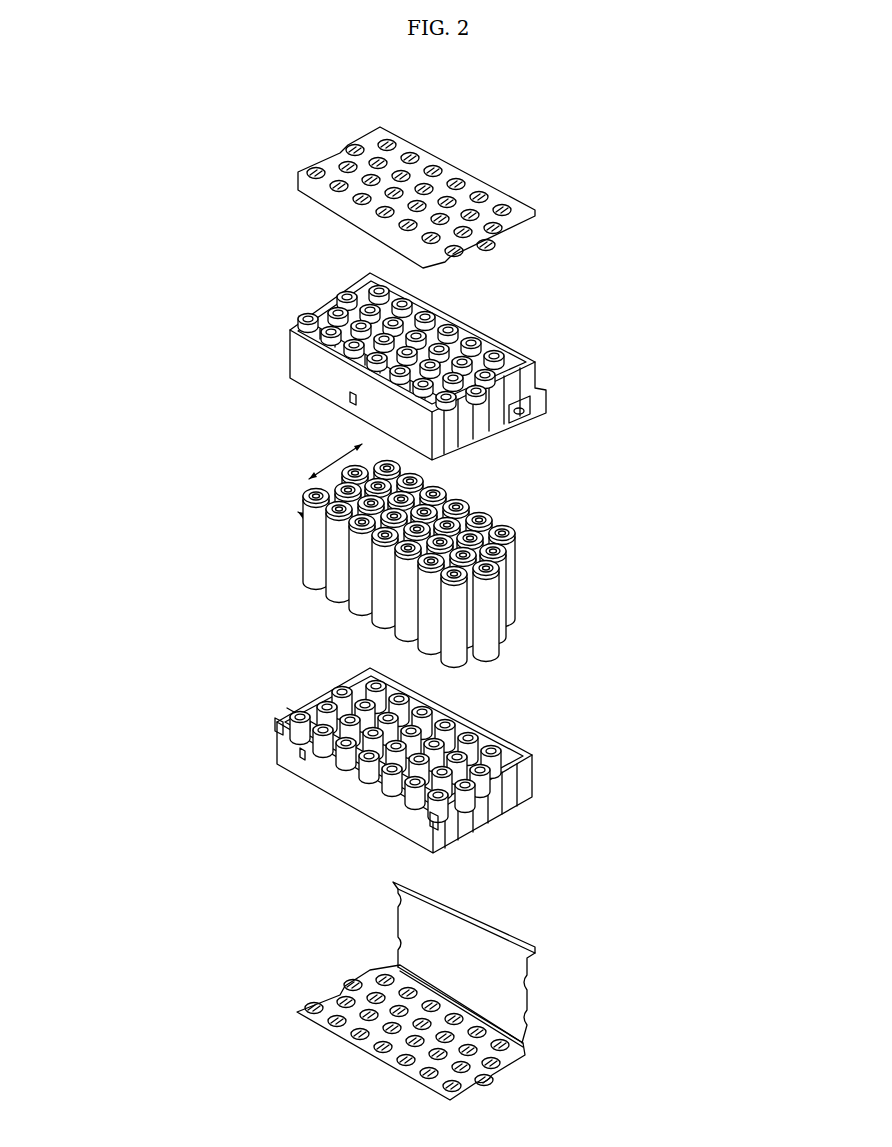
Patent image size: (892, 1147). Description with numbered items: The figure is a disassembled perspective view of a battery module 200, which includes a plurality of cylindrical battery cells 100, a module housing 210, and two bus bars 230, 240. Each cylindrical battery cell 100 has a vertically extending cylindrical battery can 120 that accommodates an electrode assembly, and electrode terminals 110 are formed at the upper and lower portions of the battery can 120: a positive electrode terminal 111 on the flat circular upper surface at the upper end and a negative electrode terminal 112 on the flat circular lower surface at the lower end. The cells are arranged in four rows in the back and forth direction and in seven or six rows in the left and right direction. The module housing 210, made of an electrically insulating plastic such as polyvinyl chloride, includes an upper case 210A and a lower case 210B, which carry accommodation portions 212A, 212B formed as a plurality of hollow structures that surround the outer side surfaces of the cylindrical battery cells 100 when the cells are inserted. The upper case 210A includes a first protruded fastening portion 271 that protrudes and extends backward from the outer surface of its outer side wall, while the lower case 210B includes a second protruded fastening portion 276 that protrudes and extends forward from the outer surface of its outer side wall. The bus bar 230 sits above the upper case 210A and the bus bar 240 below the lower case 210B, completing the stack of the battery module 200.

The battery module 200 is at (264, 81).
The bus bar 230 is at (468, 154).
The module housing 210 is at (190, 372).
The upper case 210A is at (312, 371).
The accommodation portion 212A is at (448, 333).
The first protruded fastening portion 271 is at (548, 400).
The lower case 210B is at (312, 768).
The accommodation portion 212B is at (470, 742).
The second protruded fastening portion 276 is at (280, 726).
The cylindrical battery cell 100 is at (549, 570).
The electrode terminals 110 is at (702, 382).
The positive electrode terminal 111 is at (506, 530).
The negative electrode terminal 112 is at (497, 642).
The battery can 120 is at (517, 552).
The bus bar 240 is at (514, 915).